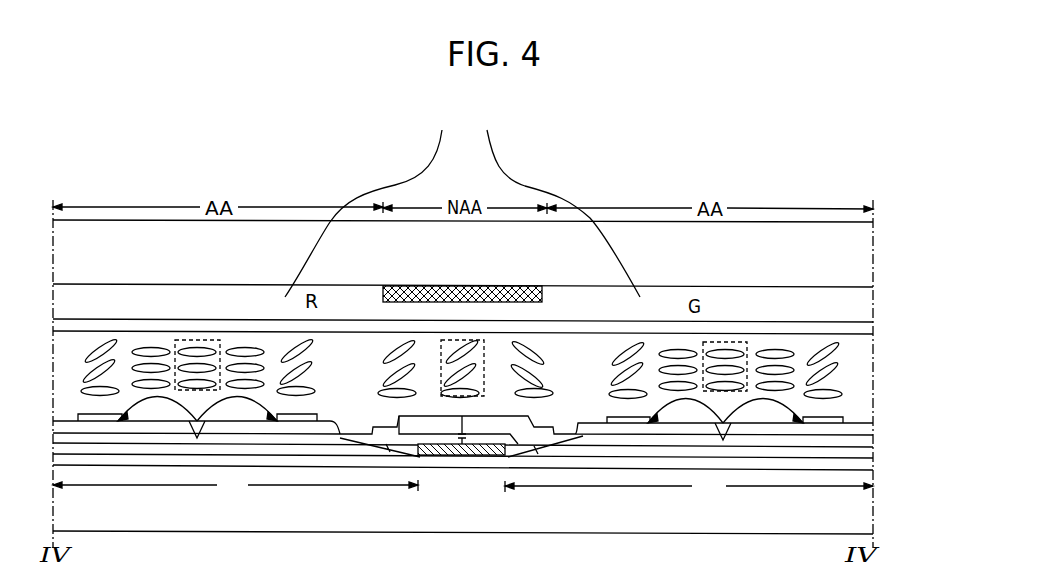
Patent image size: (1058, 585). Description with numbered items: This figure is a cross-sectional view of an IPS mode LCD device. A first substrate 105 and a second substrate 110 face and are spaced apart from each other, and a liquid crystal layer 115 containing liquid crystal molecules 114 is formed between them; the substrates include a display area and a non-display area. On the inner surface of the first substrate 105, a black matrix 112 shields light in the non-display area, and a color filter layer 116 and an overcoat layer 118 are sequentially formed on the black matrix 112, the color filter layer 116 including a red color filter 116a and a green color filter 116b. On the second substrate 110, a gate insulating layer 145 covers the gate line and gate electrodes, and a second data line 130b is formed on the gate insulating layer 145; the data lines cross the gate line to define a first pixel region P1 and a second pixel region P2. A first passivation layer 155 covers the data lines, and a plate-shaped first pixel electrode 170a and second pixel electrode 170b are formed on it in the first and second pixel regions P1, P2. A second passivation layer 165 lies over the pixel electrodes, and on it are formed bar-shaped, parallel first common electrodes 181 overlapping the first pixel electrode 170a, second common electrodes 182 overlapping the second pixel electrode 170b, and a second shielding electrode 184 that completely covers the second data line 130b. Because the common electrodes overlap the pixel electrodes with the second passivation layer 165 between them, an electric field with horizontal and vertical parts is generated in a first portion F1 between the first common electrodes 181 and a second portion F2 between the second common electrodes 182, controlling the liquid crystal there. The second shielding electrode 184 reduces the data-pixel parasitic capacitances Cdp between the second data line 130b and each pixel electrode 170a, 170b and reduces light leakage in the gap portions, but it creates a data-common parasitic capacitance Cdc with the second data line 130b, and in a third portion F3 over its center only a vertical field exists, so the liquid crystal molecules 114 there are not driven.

The first substrate 105 is at (862, 258).
The second substrate 110 is at (863, 528).
The black matrix 112 is at (442, 285).
The liquid crystal molecules 114 is at (820, 355).
The liquid crystal layer 115 is at (873, 334).
The color filter layer 116 is at (487, 111).
The red color filter 116a is at (372, 203).
The green color filter 116b is at (556, 203).
The overcoat layer 118 is at (777, 328).
The second data line 130b is at (441, 456).
The gate insulating layer 145 is at (584, 462).
The first passivation layer 155 is at (328, 450).
The second passivation layer 165 is at (422, 425).
The first pixel electrode 170a is at (182, 438).
The second pixel electrode 170b is at (712, 440).
The first common electrodes 181 is at (118, 415).
The second common electrodes 182 is at (631, 420).
The second shielding electrode 184 is at (492, 417).
The first portion F1 is at (196, 338).
The second portion F2 is at (727, 341).
The third portion F3 is at (475, 340).
The first pixel region P1 is at (235, 485).
The second pixel region P2 is at (689, 485).
The data-common parasitic capacitance Cdc is at (517, 443).
The data-pixel parasitic capacitances Cdp is at (461, 454).